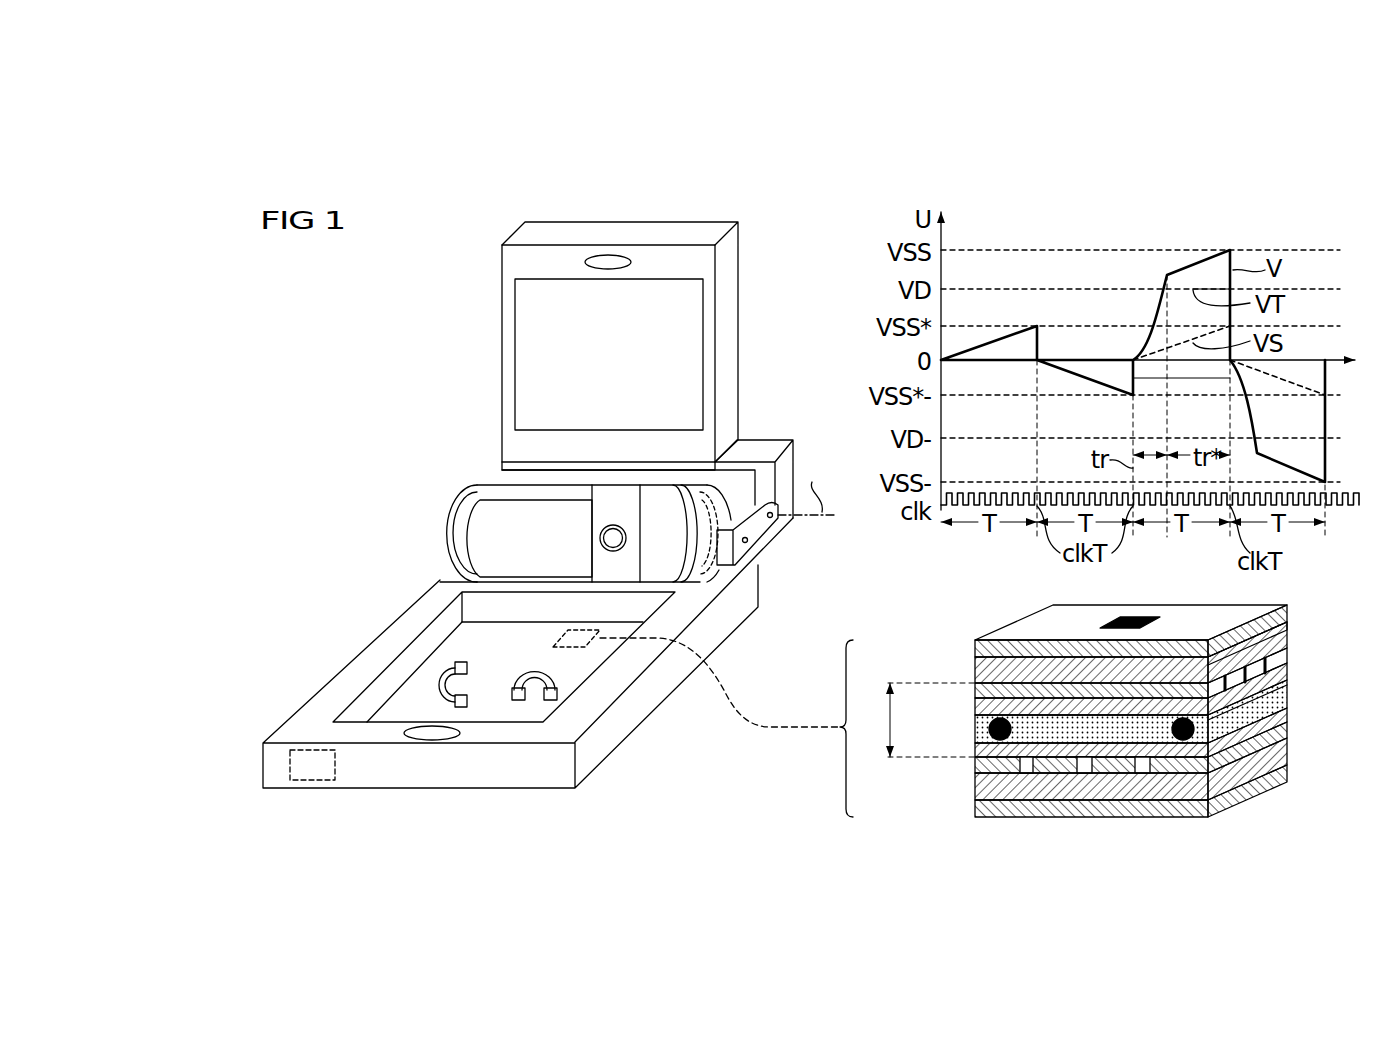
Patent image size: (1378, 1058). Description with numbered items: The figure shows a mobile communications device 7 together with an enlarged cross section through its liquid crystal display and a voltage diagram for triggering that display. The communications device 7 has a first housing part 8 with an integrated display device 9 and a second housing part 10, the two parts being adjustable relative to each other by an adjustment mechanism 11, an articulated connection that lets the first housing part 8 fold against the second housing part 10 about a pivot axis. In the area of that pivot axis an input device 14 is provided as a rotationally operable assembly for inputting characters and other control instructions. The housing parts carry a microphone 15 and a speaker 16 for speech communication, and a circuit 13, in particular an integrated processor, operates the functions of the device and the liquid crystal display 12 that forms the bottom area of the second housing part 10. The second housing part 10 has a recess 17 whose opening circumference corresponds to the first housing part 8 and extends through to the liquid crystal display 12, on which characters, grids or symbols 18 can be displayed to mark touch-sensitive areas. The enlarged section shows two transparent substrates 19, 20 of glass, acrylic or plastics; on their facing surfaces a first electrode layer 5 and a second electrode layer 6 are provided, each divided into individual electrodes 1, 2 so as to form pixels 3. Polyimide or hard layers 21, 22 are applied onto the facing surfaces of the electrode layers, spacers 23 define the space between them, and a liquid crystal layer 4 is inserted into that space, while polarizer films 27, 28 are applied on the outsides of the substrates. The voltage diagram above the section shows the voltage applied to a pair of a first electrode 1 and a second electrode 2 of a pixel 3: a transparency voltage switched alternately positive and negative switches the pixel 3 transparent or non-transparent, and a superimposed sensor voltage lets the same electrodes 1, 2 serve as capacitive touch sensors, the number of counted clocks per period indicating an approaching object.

The first electrode 1 is at (1287, 657).
The second electrode 2 is at (1273, 733).
The pixel 3 is at (558, 638).
The liquid crystal layer 4 is at (1287, 700).
The first electrode layer 5 is at (1302, 668).
The second electrode layer 6 is at (963, 768).
The mobile communications device 7 is at (436, 363).
The first housing part 8 is at (512, 260).
The display device 9 is at (525, 310).
The second housing part 10 is at (305, 717).
The adjustment mechanism 11 is at (768, 540).
The liquid crystal display 12 is at (570, 668).
The circuit 13 is at (313, 782).
The input device 14 is at (383, 517).
The microphone 15 is at (437, 733).
The speaker 16 is at (608, 268).
The recess 17 is at (398, 665).
The symbols 18 is at (508, 693).
The first substrate 19 is at (975, 668).
The second substrate 20 is at (1287, 760).
The polyimide layer 21 is at (975, 708).
The polyimide layer 22 is at (975, 748).
The spacers 23 is at (975, 735).
The polarizer film 27 is at (1287, 612).
The polarizer film 28 is at (975, 808).